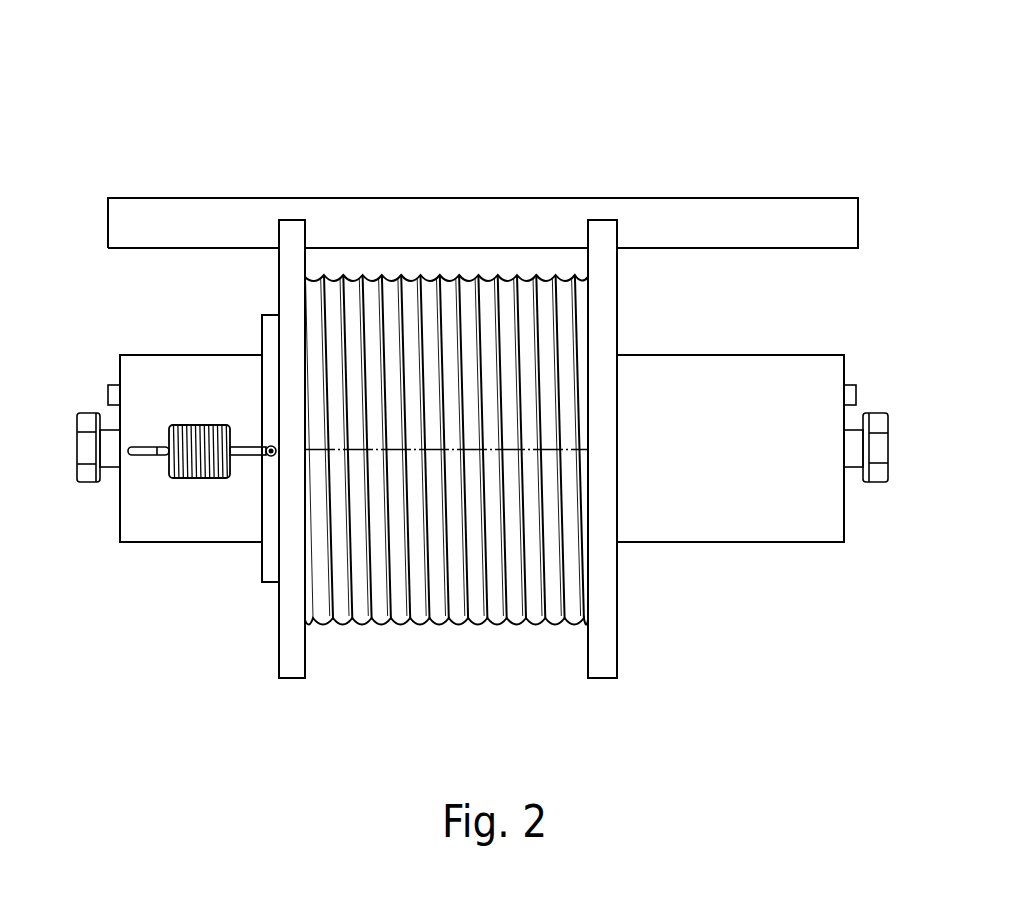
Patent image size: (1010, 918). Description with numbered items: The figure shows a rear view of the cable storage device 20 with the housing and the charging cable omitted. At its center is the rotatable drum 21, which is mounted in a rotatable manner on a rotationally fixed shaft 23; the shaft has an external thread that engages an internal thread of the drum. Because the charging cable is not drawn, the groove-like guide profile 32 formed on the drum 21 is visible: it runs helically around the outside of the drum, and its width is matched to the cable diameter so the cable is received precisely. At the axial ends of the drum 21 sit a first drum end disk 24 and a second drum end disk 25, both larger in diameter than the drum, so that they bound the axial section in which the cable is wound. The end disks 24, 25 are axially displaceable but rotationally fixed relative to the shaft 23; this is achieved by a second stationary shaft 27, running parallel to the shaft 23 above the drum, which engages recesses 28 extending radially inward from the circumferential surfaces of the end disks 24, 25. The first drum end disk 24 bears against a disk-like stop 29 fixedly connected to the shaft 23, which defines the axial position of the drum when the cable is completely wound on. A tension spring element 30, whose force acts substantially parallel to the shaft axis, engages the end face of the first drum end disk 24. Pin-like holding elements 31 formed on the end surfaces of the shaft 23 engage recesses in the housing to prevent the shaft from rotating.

The cable storage device 20 is at (706, 78).
The rotatable drum 21 is at (515, 690).
The shaft 23 is at (825, 508).
The first drum end disk 24 is at (300, 653).
The second drum end disk 25 is at (603, 645).
The second stationary shaft 27 is at (795, 210).
The recesses 28 is at (312, 228).
The disk-like stop 29 is at (268, 327).
The tension spring element 30 is at (188, 467).
The pin-like holding elements 31 is at (108, 389).
The groove-like guide profile 32 is at (387, 622).